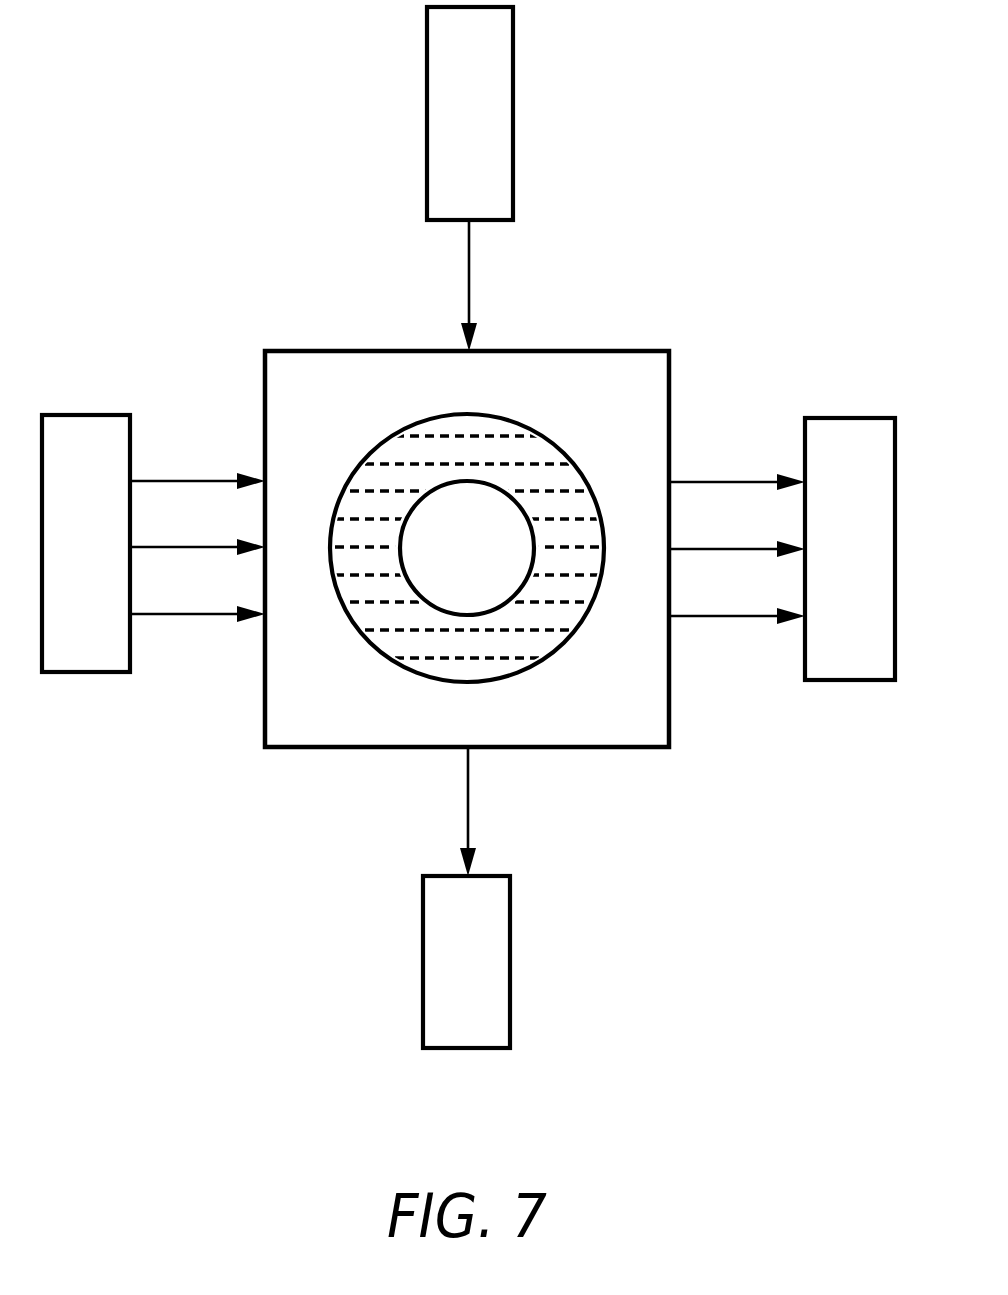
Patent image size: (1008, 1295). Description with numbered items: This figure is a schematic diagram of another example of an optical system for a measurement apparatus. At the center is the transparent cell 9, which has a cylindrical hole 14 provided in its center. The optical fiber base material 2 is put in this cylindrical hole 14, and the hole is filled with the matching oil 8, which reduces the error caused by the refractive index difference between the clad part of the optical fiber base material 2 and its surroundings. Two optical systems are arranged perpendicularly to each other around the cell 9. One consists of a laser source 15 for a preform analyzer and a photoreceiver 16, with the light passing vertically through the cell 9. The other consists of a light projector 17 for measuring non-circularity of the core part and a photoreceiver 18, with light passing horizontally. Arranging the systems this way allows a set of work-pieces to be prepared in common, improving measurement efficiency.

The optical fiber base material 2 is at (483, 508).
The matching oil 8 is at (432, 458).
The cell 9 is at (265, 704).
The cylindrical hole 14 is at (528, 660).
The laser source 15 is at (503, 115).
The photoreceiver 16 is at (498, 963).
The light projector 17 is at (85, 426).
The photoreceiver 18 is at (851, 428).